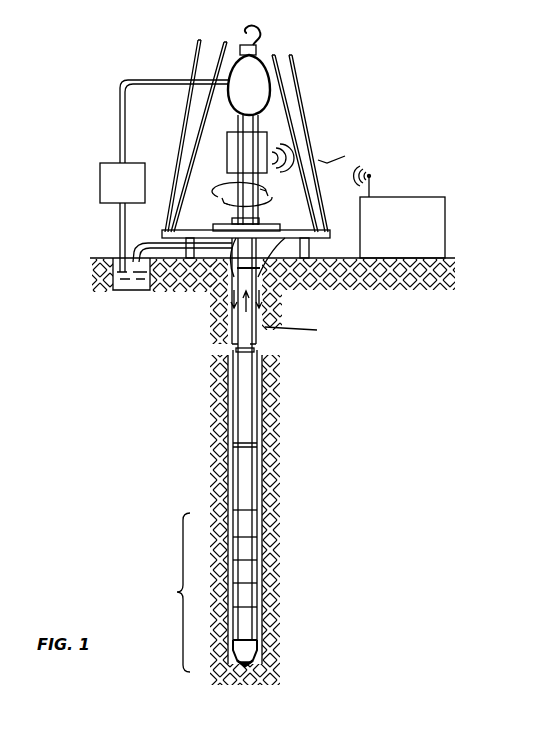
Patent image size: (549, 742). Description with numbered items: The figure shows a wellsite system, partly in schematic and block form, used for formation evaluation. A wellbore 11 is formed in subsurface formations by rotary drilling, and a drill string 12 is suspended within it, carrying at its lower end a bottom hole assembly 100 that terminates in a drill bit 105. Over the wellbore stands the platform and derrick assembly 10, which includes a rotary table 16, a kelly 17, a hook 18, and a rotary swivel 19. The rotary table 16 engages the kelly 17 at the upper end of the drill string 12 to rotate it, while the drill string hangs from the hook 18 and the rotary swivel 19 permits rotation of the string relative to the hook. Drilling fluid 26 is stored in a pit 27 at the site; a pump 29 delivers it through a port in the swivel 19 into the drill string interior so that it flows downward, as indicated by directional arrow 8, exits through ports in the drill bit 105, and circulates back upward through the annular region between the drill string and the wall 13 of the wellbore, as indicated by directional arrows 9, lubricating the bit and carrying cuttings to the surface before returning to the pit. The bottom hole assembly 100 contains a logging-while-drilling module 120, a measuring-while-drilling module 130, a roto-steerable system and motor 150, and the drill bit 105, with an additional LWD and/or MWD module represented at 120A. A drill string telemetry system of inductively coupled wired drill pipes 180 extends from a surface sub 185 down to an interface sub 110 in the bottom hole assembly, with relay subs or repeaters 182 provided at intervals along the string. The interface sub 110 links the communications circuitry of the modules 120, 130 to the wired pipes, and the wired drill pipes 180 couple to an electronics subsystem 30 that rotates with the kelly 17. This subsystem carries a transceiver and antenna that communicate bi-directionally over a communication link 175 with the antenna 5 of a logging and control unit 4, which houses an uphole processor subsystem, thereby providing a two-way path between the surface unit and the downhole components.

The platform and derrick assembly 10 is at (324, 76).
The wellbore 11 is at (281, 231).
The hook 18 is at (245, 31).
The rotary swivel 19 is at (245, 104).
The electronics subsystem 30 is at (235, 153).
The kelly 17 is at (243, 217).
The drill string 12 is at (236, 223).
The rotary table 16 is at (272, 223).
The surface sub 185 is at (277, 263).
The directional arrows 9 is at (243, 299).
The directional arrow 8 is at (243, 303).
The wired drill pipes 180 is at (248, 332).
The wall of the wellbore 13 is at (232, 378).
The relay subs or repeaters 182 is at (242, 443).
The bottom hole assembly 100 is at (181, 590).
The interface sub 110 is at (245, 525).
The logging-while-drilling module 120 is at (245, 546).
The measuring-while-drilling module 130 is at (245, 573).
The additional LWD and/or MWD module 120A is at (245, 596).
The roto-steerable system and motor 150 is at (245, 622).
The drill bit 105 is at (245, 650).
The pump 29 is at (116, 206).
The pit 27 is at (115, 251).
The drilling fluid 26 is at (132, 293).
The logging and control unit 4 is at (432, 197).
The antenna 5 is at (371, 187).
The communication link 175 is at (322, 163).